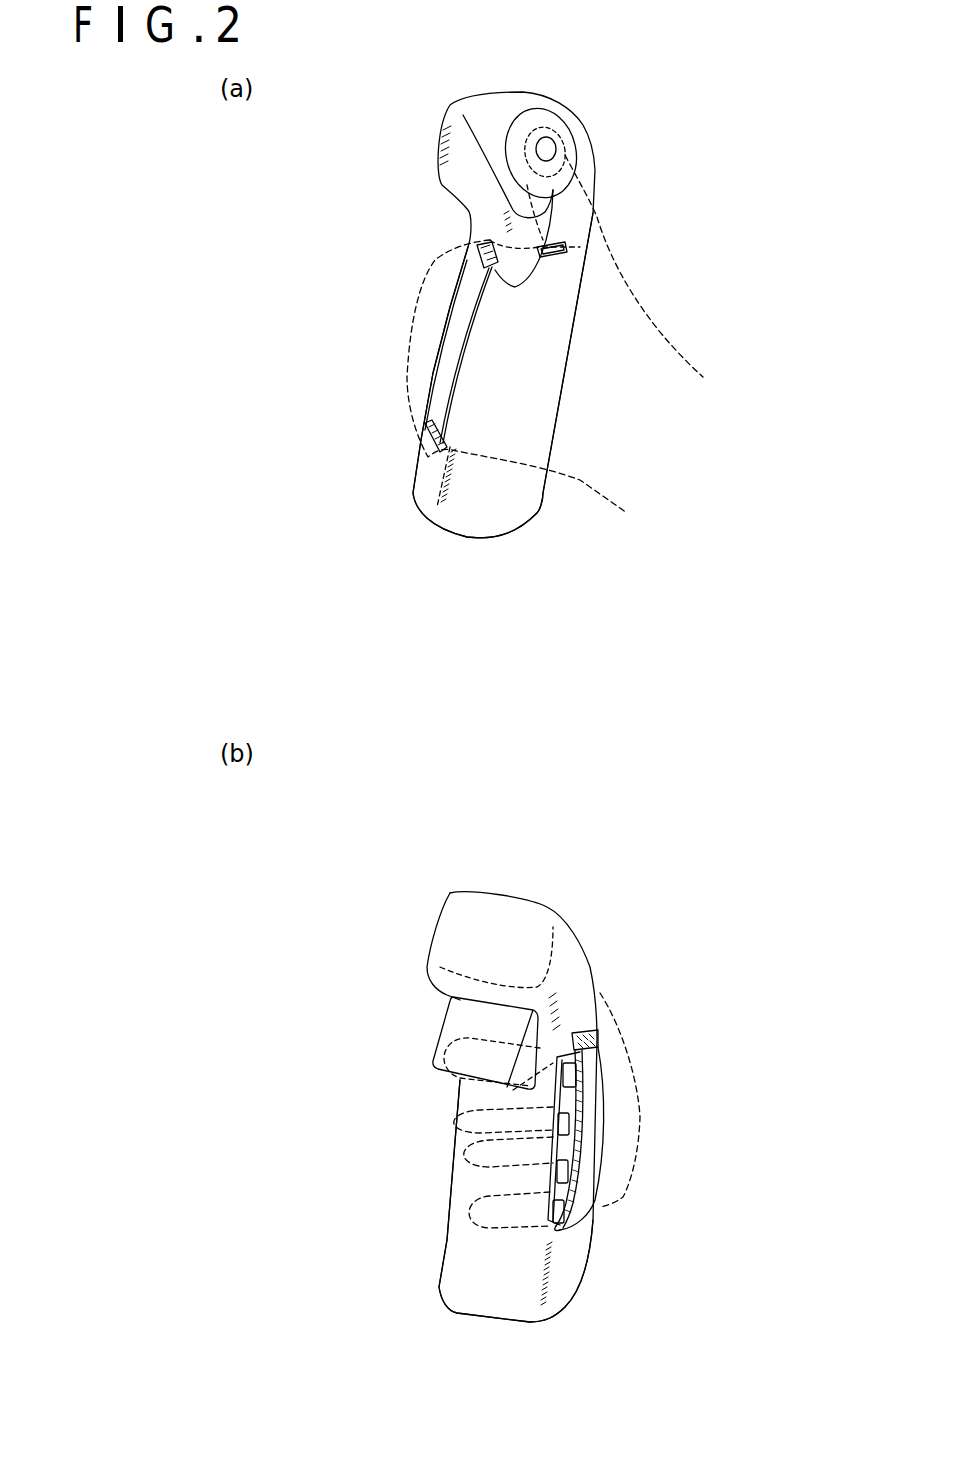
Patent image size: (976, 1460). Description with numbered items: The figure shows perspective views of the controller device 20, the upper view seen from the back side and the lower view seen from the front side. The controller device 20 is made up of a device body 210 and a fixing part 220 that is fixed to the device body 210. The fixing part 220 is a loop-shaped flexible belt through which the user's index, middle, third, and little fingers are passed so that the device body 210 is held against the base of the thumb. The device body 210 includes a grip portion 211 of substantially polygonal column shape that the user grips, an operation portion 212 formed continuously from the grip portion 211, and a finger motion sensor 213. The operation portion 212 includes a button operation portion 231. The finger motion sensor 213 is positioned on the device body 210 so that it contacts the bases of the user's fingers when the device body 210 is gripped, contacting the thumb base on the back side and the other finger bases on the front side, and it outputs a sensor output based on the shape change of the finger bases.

The controller device 20 is at (518, 731).
The device body 210 is at (600, 168).
The grip portion 211 is at (494, 502).
The operation portion 212 is at (570, 140).
The finger motion sensor 213 is at (570, 255).
The fixing part 220 is at (440, 395).
The button operation portion 231 is at (540, 148).